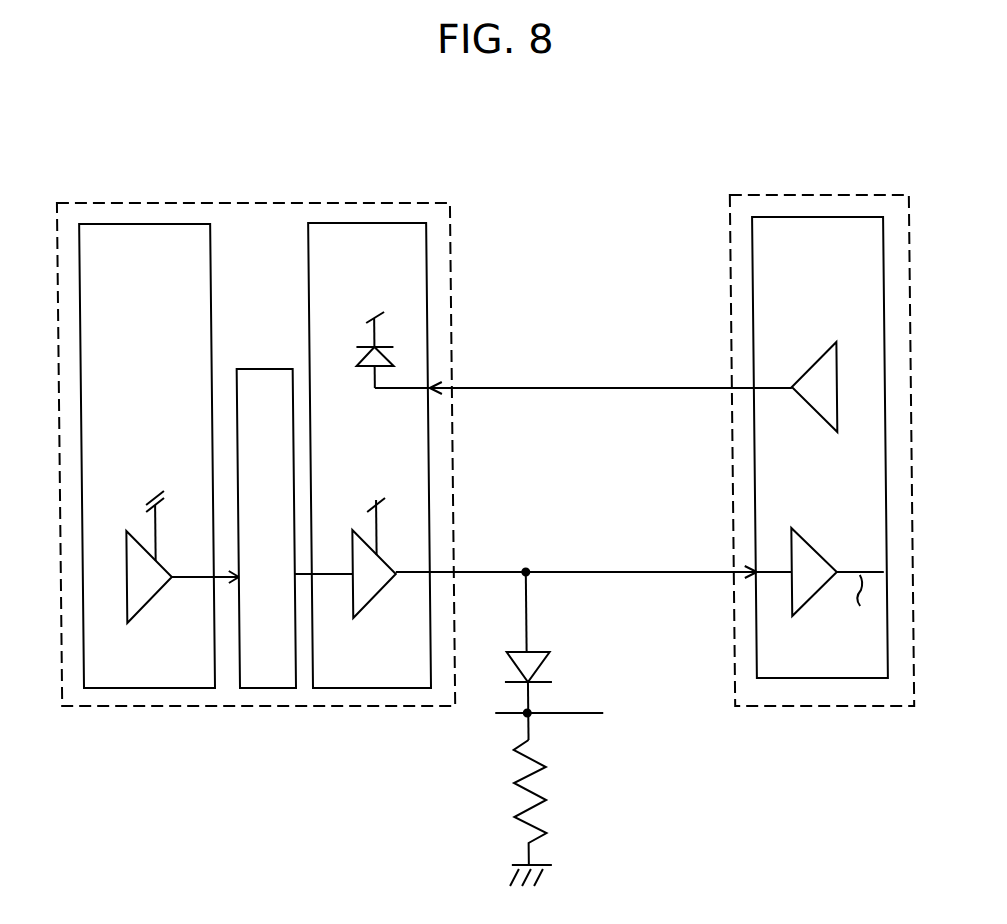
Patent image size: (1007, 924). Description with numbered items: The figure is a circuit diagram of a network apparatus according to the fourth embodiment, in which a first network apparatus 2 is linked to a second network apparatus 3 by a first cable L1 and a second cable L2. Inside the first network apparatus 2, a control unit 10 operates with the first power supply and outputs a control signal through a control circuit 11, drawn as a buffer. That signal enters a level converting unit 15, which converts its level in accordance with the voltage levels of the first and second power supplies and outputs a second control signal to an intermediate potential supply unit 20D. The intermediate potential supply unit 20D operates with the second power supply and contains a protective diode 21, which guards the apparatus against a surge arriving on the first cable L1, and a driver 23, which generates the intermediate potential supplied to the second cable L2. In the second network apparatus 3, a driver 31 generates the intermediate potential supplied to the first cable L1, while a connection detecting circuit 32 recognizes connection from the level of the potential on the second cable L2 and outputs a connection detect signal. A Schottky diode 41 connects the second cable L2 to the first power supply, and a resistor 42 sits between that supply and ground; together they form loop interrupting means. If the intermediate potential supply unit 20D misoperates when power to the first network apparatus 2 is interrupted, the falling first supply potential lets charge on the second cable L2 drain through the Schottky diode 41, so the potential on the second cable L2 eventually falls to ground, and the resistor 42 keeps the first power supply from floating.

The first network apparatus 2 is at (275, 202).
The second network apparatus 3 is at (822, 195).
The control unit 10 is at (140, 223).
The control circuit 11 is at (148, 597).
The level converting unit 15 is at (265, 369).
The intermediate potential supply unit 20D is at (400, 222).
The protective diode 21 is at (364, 372).
The driver 23 is at (377, 593).
The driver 31 is at (808, 368).
The connection detecting circuit 32 is at (815, 548).
The Schottky diode 41 is at (545, 660).
The resistor 42 is at (540, 798).
The first cable L1 is at (690, 386).
The second cable L2 is at (690, 578).